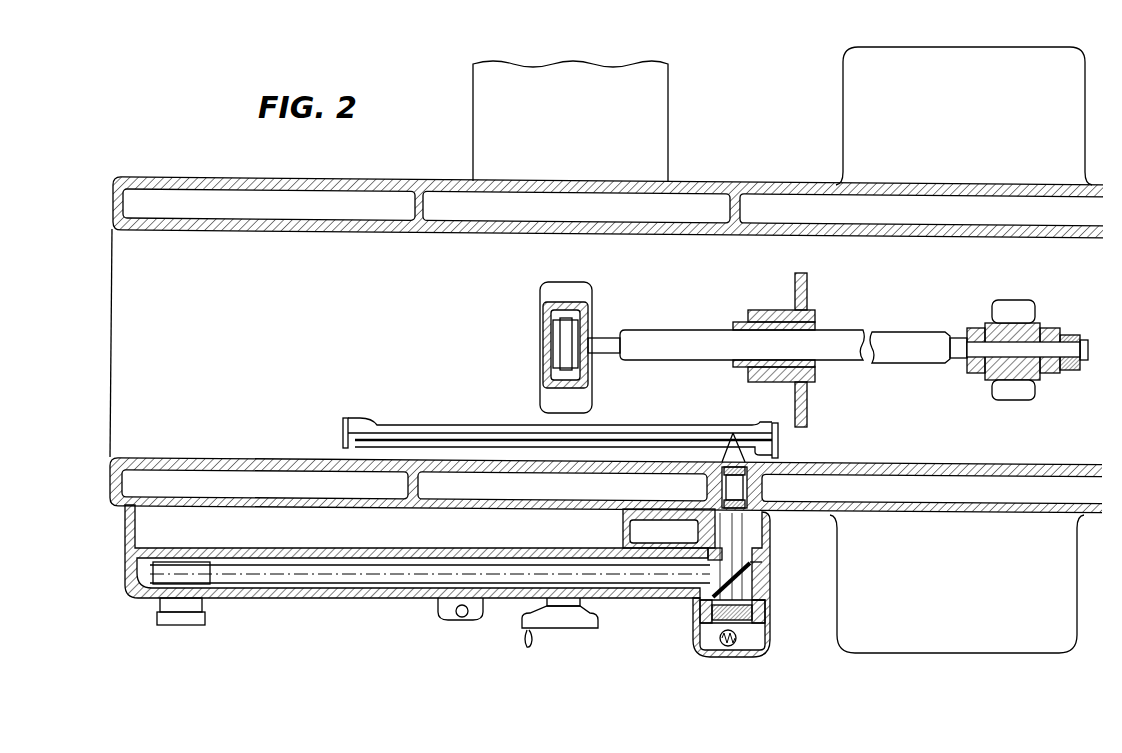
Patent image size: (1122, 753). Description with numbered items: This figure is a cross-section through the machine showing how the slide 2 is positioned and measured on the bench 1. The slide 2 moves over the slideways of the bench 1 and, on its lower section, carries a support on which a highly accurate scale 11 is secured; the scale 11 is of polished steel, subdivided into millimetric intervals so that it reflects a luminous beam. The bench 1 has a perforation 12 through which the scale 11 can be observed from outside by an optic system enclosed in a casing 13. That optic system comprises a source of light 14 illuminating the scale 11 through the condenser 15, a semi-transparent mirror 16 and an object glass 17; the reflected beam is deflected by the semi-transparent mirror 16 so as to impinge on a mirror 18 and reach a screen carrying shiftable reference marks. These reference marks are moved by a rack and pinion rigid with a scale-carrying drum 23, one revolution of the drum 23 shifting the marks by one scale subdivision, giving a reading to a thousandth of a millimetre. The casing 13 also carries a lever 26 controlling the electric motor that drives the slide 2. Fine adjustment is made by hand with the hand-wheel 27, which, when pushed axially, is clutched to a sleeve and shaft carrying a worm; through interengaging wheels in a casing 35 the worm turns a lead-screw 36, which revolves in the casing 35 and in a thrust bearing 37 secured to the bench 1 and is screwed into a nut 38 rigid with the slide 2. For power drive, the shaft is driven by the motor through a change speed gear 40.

The bench 1 is at (677, 181).
The slide 2 is at (808, 292).
The scale 11 is at (404, 433).
The perforation 12 is at (760, 488).
The casing 13 is at (331, 591).
The source of light 14 is at (700, 639).
The condenser 15 is at (768, 600).
The semi-transparent mirror 16 is at (767, 580).
The object glass 17 is at (736, 509).
The mirror 18 is at (196, 582).
The scale-carrying drum 23 is at (190, 627).
The lever 26 is at (452, 613).
The hand-wheel 27 is at (566, 630).
The casing 35 is at (543, 349).
The lead-screw 36 is at (658, 337).
The thrust bearing 37 is at (1014, 320).
The nut 38 is at (736, 325).
The change speed gear 40 is at (667, 97).